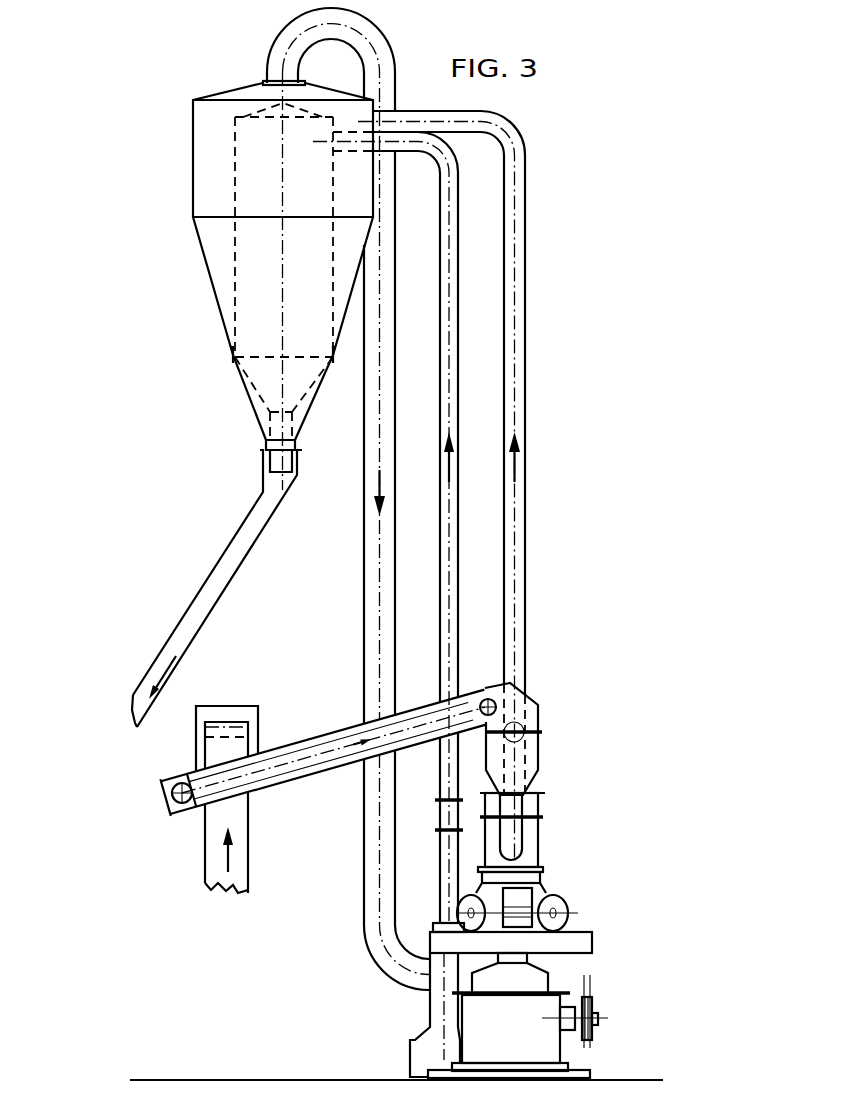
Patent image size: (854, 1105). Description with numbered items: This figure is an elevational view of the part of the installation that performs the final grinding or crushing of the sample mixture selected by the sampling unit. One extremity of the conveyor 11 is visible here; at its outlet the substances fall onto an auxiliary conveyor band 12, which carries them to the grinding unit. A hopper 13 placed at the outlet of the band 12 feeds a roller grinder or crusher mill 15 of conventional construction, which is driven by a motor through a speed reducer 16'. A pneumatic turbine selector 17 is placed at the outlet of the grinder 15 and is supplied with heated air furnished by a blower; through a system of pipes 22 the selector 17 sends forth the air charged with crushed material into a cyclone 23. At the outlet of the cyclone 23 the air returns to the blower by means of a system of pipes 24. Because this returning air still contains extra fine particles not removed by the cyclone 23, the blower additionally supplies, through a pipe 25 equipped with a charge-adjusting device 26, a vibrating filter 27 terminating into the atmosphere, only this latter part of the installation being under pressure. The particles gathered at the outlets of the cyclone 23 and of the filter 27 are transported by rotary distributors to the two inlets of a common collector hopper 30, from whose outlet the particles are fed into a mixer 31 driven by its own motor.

The conveyor 11 is at (220, 842).
The auxiliary conveyor band 12 is at (275, 752).
The hopper 13 is at (532, 748).
The roller grinder or crusher mill 15 is at (537, 893).
The speed reducer 16' is at (536, 1015).
The pneumatic turbine selector 17 is at (530, 807).
The system of pipes 22 is at (517, 508).
The cyclone 23 is at (210, 233).
The system of pipes 24 is at (367, 535).
The pipe 25 is at (442, 511).
The charge-adjusting device 26 is at (445, 820).
The vibrating filter 27 is at (235, 360).
The common collector hopper 30 is at (210, 592).
The mixer 31 is at (85, 727).